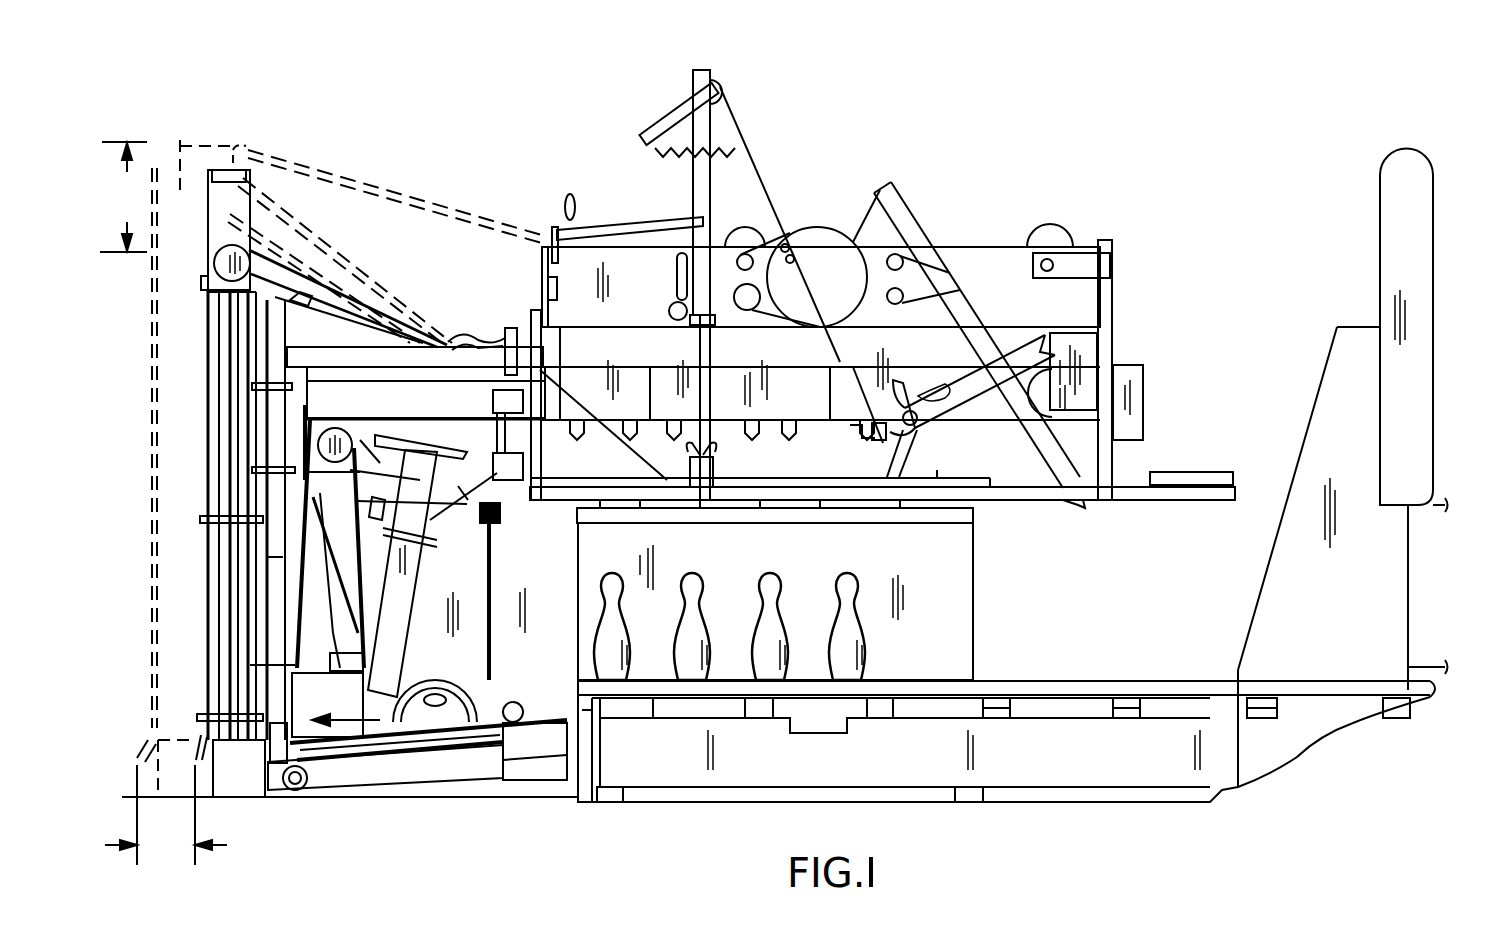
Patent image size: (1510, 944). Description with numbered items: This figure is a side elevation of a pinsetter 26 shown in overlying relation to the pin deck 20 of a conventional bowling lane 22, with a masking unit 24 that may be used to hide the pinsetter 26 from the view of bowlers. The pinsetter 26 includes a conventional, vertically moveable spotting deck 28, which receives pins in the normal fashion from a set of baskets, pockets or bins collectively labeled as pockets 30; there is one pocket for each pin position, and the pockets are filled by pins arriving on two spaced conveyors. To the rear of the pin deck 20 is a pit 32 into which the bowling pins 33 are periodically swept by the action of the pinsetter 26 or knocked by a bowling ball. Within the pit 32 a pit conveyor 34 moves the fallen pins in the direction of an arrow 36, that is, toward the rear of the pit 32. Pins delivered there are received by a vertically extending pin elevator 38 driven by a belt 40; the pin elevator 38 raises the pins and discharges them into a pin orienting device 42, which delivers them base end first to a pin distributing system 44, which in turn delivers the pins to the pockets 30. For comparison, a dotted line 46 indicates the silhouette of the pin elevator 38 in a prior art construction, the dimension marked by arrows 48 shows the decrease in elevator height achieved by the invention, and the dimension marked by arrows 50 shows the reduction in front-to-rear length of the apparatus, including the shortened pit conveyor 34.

The pin deck 20 is at (925, 682).
The bowling lane 22 is at (1185, 681).
The masking unit 24 is at (1425, 270).
The pinsetter 26 is at (972, 218).
The spotting deck 28 is at (903, 520).
The pockets 30 is at (767, 410).
The pit 32 is at (522, 690).
The bowling pins 33 is at (837, 603).
The pit conveyor 34 is at (527, 724).
The arrow 36 is at (352, 720).
The pin elevator 38 is at (237, 600).
The belt 40 is at (354, 305).
The pin orienting device 42 is at (311, 336).
The pin distributing system 44 is at (411, 333).
The dotted line 46 is at (152, 410).
The arrows 48 is at (127, 170).
The arrows 50 is at (227, 845).